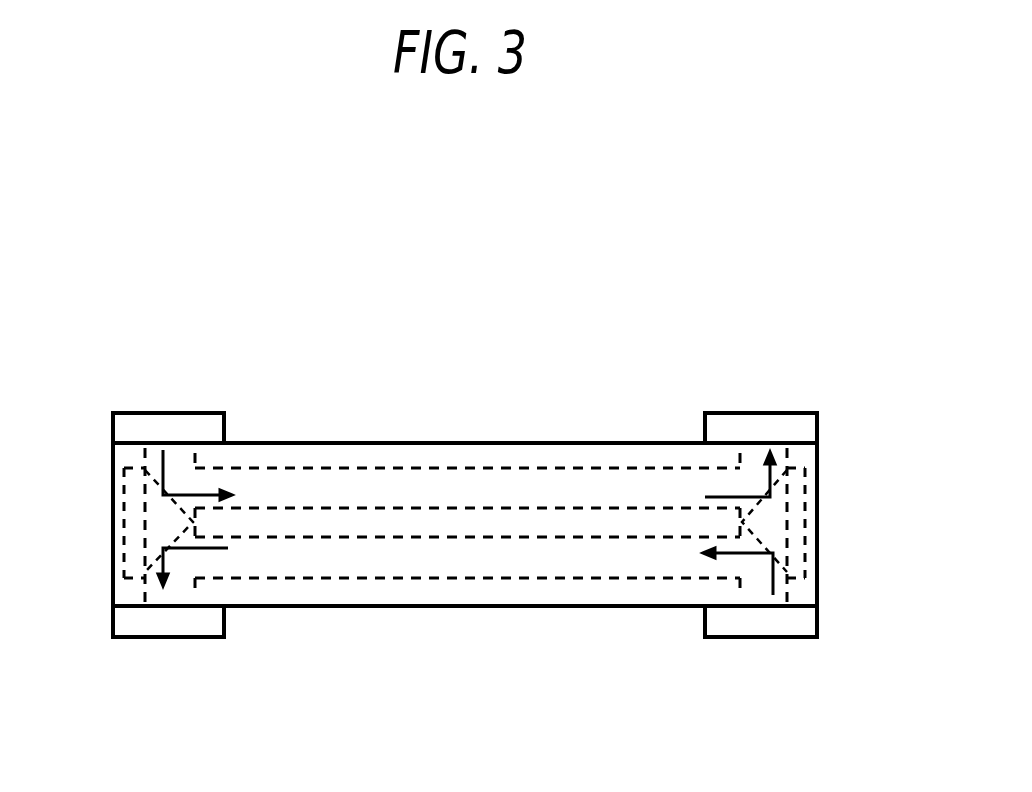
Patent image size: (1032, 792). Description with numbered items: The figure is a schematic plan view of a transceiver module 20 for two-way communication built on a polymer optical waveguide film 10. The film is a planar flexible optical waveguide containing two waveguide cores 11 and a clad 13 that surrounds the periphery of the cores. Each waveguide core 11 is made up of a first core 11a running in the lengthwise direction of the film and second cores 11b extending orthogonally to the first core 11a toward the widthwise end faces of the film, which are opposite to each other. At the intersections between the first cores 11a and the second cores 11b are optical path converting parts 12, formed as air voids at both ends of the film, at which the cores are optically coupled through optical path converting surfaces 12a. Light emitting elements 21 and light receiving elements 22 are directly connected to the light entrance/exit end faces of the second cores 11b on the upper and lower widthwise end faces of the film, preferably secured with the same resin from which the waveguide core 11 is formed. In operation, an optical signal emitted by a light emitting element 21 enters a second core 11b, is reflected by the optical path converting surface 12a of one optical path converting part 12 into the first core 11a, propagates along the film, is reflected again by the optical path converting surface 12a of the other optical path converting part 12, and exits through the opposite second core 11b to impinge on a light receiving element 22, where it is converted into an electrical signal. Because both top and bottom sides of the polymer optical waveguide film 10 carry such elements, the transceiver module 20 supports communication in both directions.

The polymer optical waveguide film 10 is at (579, 334).
The waveguide core 11 is at (463, 511).
The first core 11a is at (292, 490).
The second core 11b is at (186, 463).
The optical path converting part 12 is at (160, 528).
The optical path converting surface 12a is at (153, 472).
The clad 13 is at (412, 593).
The transceiver module for two-way communication 20 is at (718, 232).
The light emitting element 21 is at (172, 420).
The light receiving element 22 is at (142, 624).